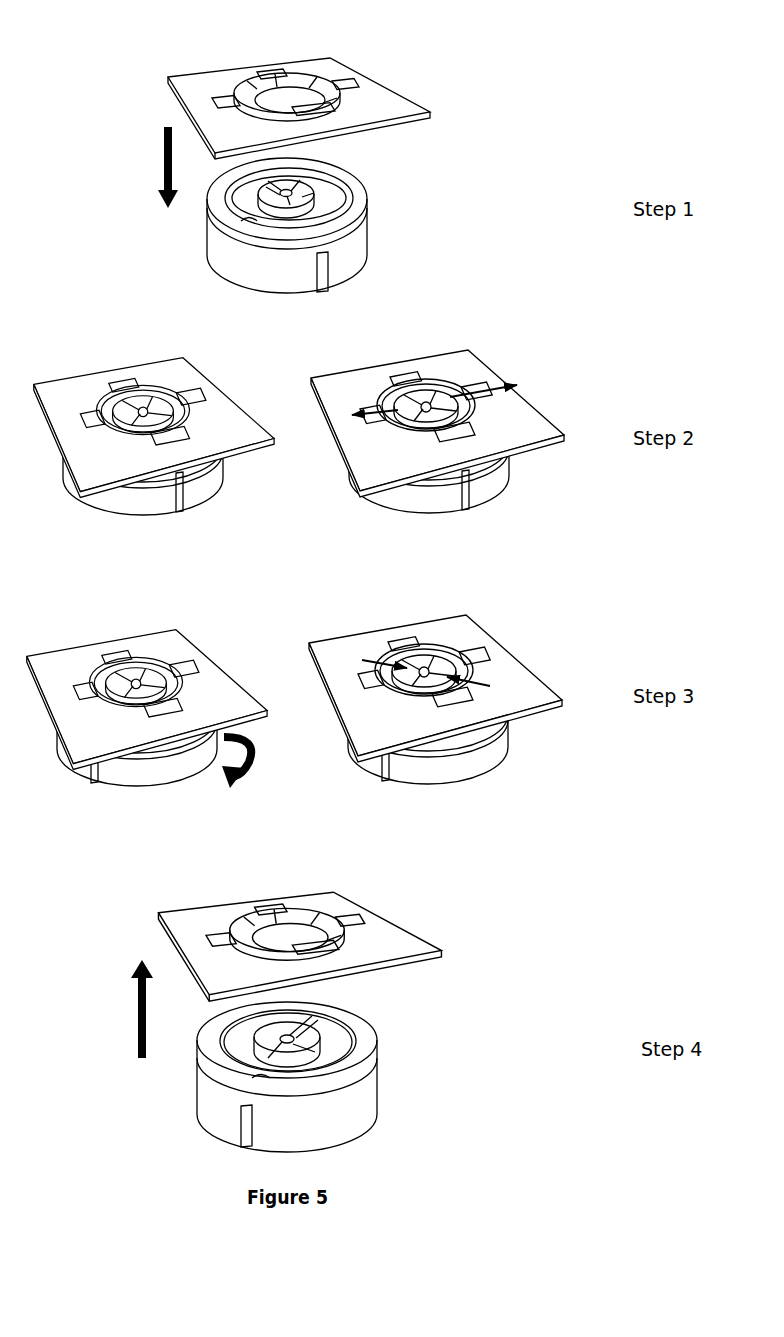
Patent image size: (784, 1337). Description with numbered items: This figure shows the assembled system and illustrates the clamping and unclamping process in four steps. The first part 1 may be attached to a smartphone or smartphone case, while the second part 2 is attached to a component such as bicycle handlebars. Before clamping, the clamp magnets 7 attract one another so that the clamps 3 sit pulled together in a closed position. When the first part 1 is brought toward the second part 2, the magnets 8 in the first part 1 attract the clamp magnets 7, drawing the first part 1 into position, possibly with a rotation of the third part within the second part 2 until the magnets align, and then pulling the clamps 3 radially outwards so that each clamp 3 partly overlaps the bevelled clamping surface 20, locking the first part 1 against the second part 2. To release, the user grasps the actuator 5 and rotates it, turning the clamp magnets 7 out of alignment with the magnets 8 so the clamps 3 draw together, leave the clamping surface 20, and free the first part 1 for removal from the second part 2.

The first part 1 is at (410, 88).
The second part 2 is at (373, 195).
The clamps 3 is at (313, 187).
The actuator 5 is at (227, 252).
The magnets 7 is at (275, 198).
The magnets 8 is at (332, 80).
The clamping surface 20 is at (297, 95).